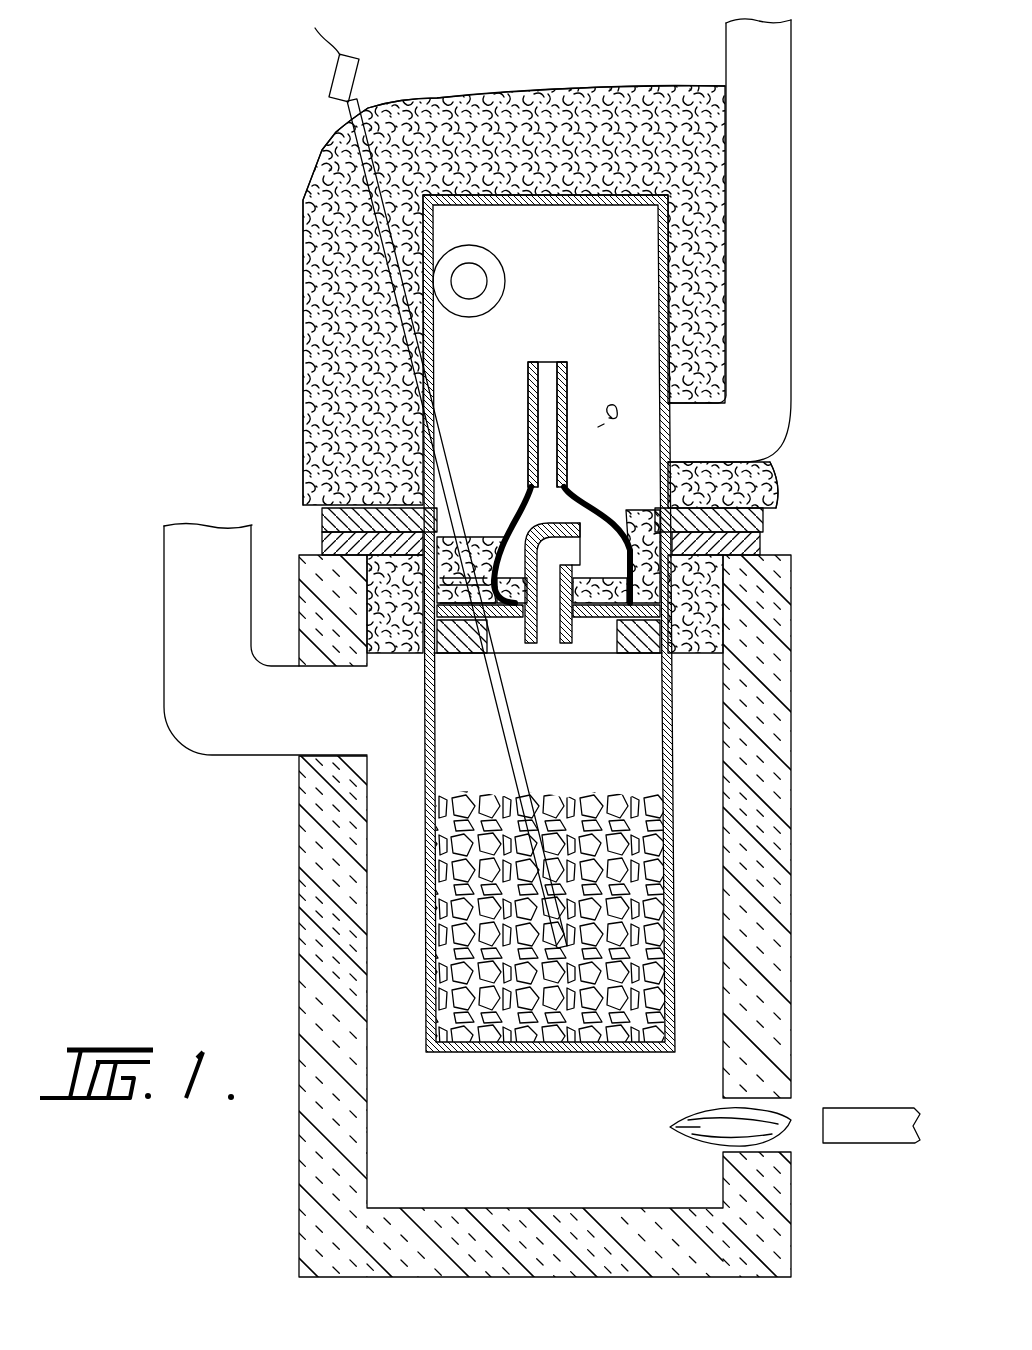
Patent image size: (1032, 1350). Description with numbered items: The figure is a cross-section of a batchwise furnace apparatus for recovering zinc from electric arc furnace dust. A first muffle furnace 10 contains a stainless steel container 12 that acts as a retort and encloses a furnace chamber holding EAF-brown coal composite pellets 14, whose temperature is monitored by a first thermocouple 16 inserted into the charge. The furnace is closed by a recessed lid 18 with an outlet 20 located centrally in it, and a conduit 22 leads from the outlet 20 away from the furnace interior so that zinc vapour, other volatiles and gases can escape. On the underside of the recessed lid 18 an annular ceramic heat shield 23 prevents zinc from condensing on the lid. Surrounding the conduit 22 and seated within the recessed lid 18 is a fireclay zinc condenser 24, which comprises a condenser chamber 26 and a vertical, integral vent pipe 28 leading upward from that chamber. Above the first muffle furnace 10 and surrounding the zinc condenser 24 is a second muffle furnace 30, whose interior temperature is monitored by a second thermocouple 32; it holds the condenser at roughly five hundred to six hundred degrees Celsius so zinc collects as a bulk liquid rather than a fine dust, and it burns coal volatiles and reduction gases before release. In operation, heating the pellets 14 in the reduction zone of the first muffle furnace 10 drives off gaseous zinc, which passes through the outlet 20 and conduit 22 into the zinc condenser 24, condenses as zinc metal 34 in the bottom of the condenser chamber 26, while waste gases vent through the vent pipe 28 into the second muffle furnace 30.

The first muffle furnace 10 is at (790, 950).
The stainless steel container 12 is at (672, 777).
The EAF-brown coal composite pellets 14 is at (620, 889).
The first thermocouple 16 is at (335, 80).
The recessed lid 18 is at (740, 517).
The outlet 20 is at (551, 643).
The conduit 22 is at (513, 547).
The annular ceramic heat shield 23 is at (660, 650).
The zinc condenser 24 is at (608, 507).
The condenser chamber 26 is at (540, 547).
The vent pipe 28 is at (528, 388).
The second muffle furnace 30 is at (553, 113).
The second thermocouple 32 is at (615, 412).
The zinc metal 34 is at (575, 580).